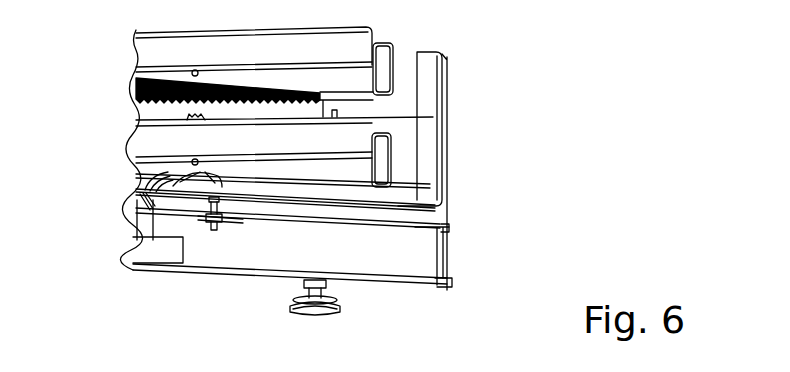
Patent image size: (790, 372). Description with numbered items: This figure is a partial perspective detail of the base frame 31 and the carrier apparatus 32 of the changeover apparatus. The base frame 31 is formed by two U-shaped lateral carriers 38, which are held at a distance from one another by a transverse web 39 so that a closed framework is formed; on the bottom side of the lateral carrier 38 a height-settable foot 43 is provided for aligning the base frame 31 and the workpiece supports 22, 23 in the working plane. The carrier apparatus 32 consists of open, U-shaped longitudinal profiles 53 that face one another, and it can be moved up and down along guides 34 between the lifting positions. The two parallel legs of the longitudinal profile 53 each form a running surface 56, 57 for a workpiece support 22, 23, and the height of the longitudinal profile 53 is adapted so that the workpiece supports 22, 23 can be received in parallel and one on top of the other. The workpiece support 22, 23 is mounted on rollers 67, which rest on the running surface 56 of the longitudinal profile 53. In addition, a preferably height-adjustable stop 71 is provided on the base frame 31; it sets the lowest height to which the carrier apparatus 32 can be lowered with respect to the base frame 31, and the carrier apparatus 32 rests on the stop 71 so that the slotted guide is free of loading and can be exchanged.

The workpiece support 22 is at (110, 53).
The workpiece support 23 is at (110, 142).
The base frame 31 is at (490, 256).
The carrier apparatus 32 is at (486, 134).
The guides 34 is at (461, 73).
The lateral carrier 38 is at (446, 250).
The transverse web 39 is at (152, 253).
The foot 43 is at (326, 319).
The longitudinal profile 53 is at (423, 182).
The running surface 56 is at (406, 198).
The running surface 57 is at (397, 108).
The rollers 67 is at (145, 173).
The stop 71 is at (213, 246).